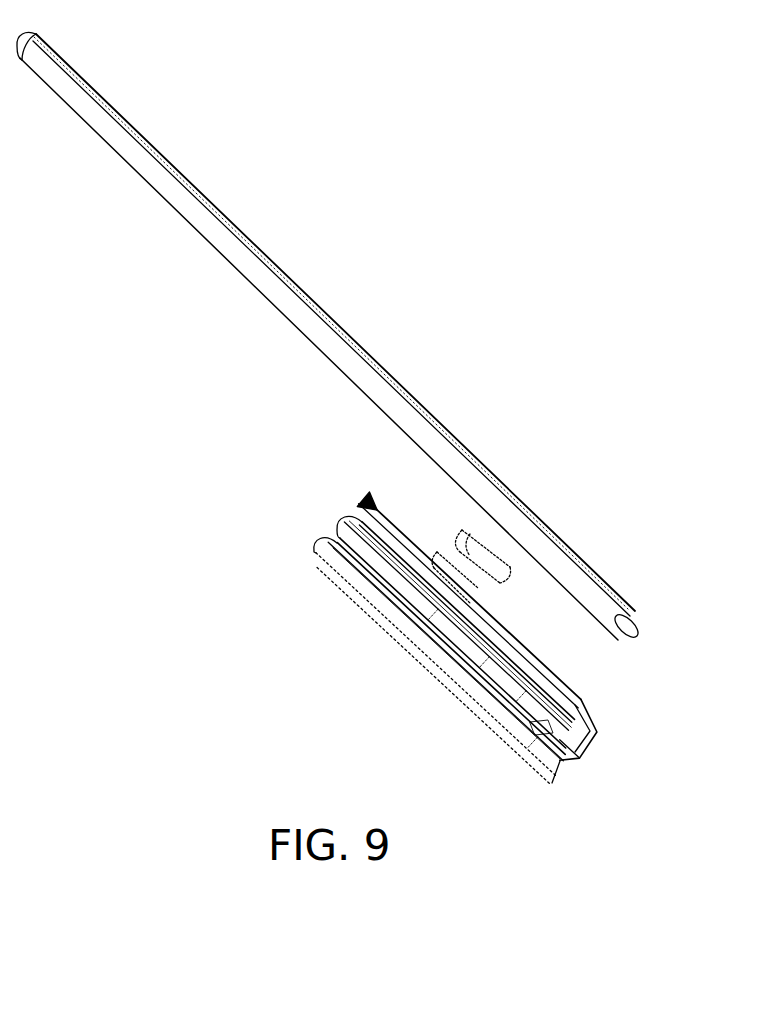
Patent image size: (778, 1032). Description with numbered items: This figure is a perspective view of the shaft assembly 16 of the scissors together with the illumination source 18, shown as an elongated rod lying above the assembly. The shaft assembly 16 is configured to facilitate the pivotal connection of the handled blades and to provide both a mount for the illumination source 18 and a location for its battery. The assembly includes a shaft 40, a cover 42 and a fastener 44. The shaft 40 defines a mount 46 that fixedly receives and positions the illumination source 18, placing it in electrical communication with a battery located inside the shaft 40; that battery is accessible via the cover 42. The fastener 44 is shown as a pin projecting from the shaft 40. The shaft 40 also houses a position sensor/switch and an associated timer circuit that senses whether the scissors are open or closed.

The illumination source 18 is at (197, 192).
The shaft assembly 16 is at (258, 562).
The mount 46 is at (371, 494).
The fastener 44 is at (482, 573).
The cover 42 is at (487, 722).
The shaft 40 is at (597, 732).